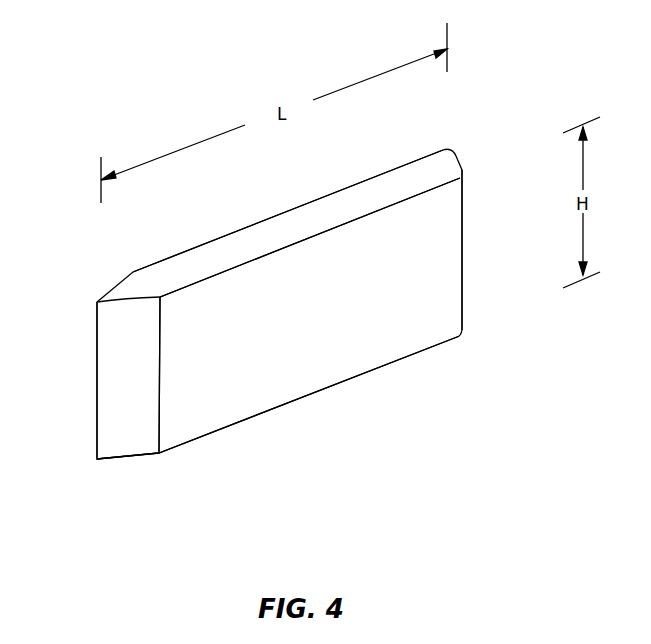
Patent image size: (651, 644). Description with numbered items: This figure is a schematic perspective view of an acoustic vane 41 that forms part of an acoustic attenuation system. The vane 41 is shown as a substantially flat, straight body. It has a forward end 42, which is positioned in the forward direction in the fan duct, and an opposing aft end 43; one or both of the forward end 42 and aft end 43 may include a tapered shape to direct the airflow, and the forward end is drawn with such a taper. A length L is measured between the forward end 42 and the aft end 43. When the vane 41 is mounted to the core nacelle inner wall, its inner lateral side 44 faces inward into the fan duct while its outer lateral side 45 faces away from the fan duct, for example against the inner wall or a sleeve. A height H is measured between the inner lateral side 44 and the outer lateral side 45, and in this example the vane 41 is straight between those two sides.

The vane 41 is at (395, 397).
The forward end 42 is at (97, 383).
The aft end 43 is at (465, 235).
The inner lateral side 44 is at (220, 253).
The outer lateral side 45 is at (288, 402).